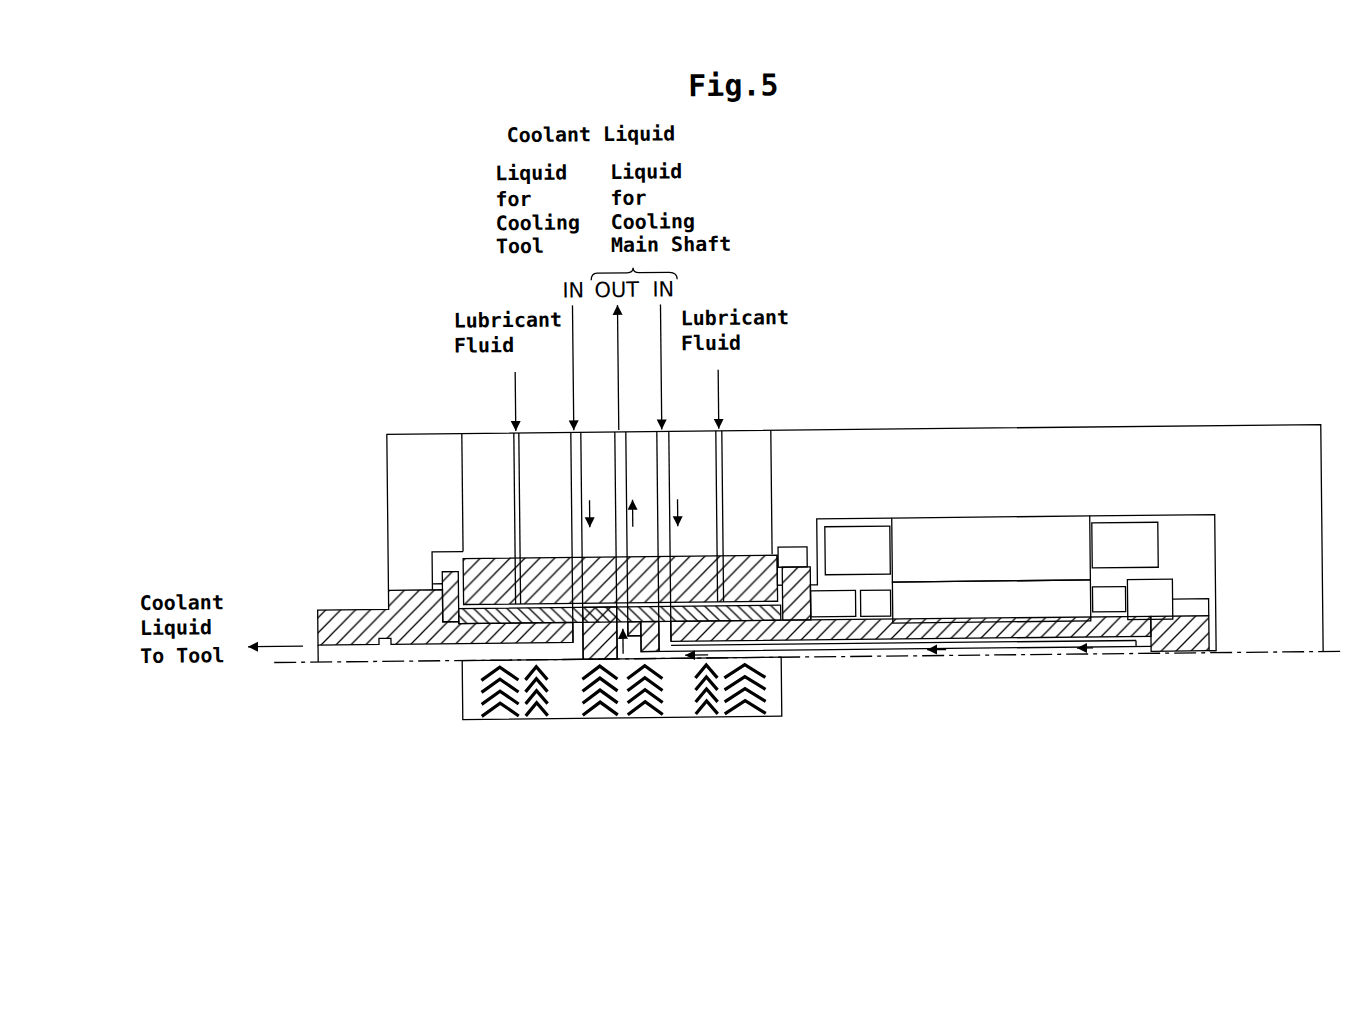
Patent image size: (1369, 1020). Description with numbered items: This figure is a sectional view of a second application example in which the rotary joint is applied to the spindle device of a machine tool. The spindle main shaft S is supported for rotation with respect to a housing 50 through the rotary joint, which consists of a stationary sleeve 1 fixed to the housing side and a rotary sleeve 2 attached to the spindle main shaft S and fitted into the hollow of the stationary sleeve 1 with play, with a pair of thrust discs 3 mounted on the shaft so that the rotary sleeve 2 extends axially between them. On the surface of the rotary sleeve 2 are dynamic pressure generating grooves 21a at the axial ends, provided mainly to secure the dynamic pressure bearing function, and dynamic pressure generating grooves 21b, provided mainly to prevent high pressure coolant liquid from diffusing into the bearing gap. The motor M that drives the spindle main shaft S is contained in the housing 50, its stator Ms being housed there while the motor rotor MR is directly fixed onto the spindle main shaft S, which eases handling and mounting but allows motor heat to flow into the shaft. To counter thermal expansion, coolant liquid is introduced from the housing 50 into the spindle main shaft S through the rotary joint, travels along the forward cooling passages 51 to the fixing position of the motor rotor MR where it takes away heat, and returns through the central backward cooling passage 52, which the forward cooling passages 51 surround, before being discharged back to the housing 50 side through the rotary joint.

The stationary sleeve 1 is at (487, 556).
The rotary sleeve 2 is at (473, 615).
The thrust disc 3 is at (440, 597).
The dynamic pressure generating grooves 21a is at (497, 704).
The dynamic pressure generating grooves 21b is at (537, 717).
The housing 50 is at (902, 429).
The forward cooling passages 51 is at (852, 650).
The backward cooling passage 52 is at (892, 650).
The spindle main shaft S is at (343, 607).
The motor M is at (1012, 549).
The motor stator Ms is at (1018, 523).
The motor rotor MR is at (1025, 608).